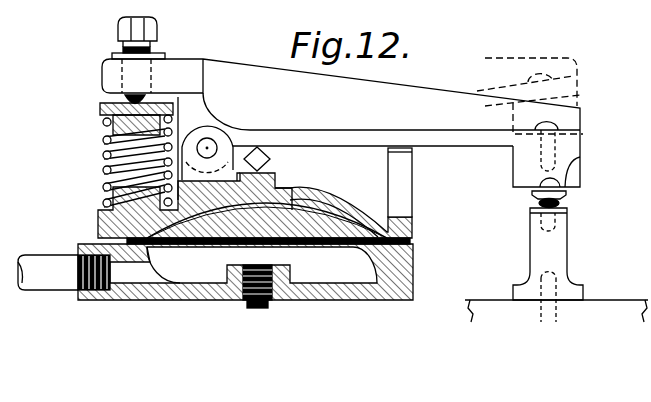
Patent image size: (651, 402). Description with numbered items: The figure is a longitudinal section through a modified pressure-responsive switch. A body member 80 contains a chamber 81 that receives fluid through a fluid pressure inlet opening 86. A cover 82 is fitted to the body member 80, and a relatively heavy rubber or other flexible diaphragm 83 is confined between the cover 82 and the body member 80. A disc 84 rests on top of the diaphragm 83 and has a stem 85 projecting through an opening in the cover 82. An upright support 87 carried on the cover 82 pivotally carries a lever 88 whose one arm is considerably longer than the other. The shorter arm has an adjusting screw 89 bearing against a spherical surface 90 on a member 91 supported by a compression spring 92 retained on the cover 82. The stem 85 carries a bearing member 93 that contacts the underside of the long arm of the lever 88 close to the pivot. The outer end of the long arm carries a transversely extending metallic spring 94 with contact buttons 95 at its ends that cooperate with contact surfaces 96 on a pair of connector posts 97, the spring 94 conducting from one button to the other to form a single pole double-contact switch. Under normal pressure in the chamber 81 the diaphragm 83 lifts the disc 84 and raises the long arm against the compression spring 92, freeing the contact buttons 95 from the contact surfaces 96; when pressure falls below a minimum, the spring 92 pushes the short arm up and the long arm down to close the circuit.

The body member 80 is at (414, 252).
The chamber 81 is at (355, 268).
The cover 82 is at (350, 208).
The flexible diaphragm 83 is at (325, 245).
The disc 84 is at (310, 224).
The stem 85 is at (264, 183).
The fluid pressure inlet opening 86 is at (42, 260).
The upright support 87 is at (207, 150).
The lever 88 is at (342, 102).
The adjusting screw 89 is at (155, 53).
The spherical surface 90 is at (127, 100).
The member 91 is at (110, 117).
The compression spring 92 is at (103, 127).
The bearing member 93 is at (259, 147).
The metallic spring 94 is at (582, 102).
The contact buttons 95 is at (568, 194).
The contact surfaces 96 is at (560, 204).
The connector posts 97 is at (560, 252).